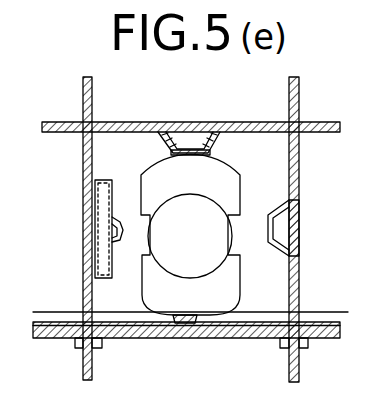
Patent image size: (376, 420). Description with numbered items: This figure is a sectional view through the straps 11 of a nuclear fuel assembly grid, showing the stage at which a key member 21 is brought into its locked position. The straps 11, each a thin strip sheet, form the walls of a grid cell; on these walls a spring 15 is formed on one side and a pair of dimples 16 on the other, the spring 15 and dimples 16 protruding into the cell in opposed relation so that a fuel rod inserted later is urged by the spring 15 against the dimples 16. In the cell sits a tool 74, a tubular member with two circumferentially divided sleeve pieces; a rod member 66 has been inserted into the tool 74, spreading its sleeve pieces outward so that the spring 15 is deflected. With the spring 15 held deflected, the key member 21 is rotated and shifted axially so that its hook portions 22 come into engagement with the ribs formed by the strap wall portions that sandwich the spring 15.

The strap 11 is at (137, 123).
The spring 15 is at (105, 252).
The dimple 16 is at (204, 127).
The key member 21 is at (314, 313).
The hook portion 22 is at (100, 348).
The rod member 66 is at (157, 240).
The tool 74 is at (230, 268).